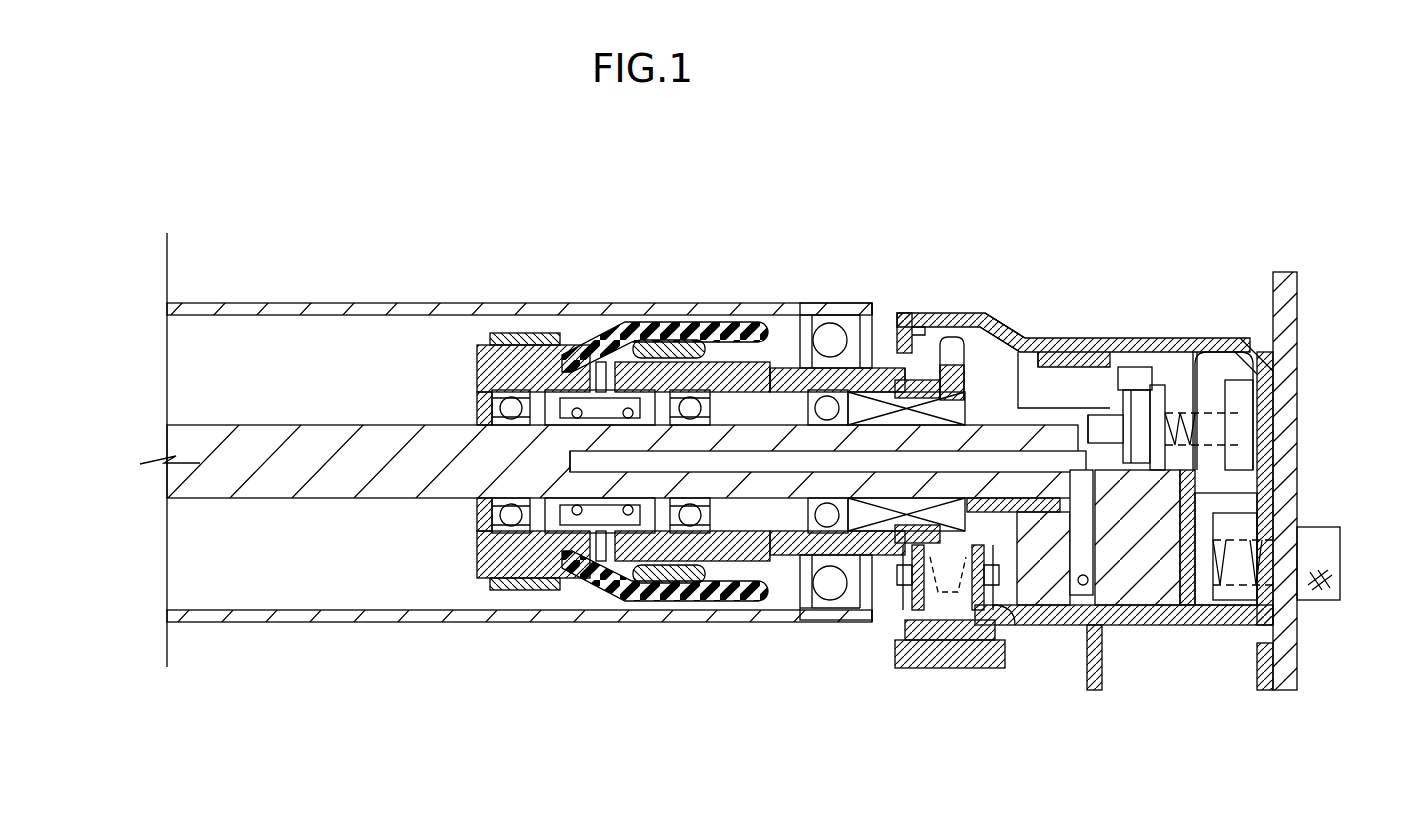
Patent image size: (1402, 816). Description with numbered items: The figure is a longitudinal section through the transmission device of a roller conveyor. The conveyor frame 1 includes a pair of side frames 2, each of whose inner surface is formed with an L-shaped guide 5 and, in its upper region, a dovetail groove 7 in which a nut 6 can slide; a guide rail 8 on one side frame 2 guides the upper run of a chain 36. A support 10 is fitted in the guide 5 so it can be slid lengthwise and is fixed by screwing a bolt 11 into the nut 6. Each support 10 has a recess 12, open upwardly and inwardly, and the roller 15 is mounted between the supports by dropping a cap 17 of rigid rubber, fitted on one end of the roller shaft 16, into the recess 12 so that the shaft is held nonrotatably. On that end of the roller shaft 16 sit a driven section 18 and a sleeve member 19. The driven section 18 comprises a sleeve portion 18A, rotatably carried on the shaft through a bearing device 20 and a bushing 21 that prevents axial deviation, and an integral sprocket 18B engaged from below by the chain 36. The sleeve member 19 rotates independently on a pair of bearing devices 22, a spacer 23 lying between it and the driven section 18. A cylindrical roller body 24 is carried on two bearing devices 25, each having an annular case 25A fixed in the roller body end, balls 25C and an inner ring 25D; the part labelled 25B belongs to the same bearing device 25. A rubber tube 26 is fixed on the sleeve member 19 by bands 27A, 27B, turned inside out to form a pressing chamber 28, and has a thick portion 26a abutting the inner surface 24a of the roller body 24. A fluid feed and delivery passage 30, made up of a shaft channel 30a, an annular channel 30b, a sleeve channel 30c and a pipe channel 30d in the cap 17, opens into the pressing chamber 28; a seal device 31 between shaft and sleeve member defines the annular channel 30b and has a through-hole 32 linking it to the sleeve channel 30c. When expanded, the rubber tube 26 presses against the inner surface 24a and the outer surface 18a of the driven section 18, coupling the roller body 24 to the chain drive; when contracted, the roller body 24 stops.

The conveyor frame 1 is at (1300, 670).
The side frame 2 is at (1256, 665).
The L-shaped guide 5 is at (1132, 575).
The nut 6 is at (1212, 466).
The dovetail groove 7 is at (1240, 380).
The guide rail 8 is at (942, 642).
The support 10 is at (1140, 575).
The bolt 11 is at (1155, 392).
The recess 12 is at (1082, 376).
The roller 15 is at (410, 623).
The roller shaft 16 is at (272, 482).
The cap 17 is at (1052, 458).
The driven section 18 is at (962, 338).
The outer surface of the driven section 18a is at (776, 366).
The sleeve portion 18A is at (902, 350).
The sprocket 18B is at (998, 322).
The sleeve member 19 is at (476, 378).
The bearing device 20 is at (826, 535).
The bushing 21 is at (874, 533).
The bearing devices 22 is at (505, 533).
The spacer 23 is at (776, 562).
The roller body 24 is at (312, 302).
The inner surface of the roller body 24a is at (582, 608).
The bearing device 25 is at (846, 320).
The annular case 25A is at (800, 557).
The bearing outer race 25B is at (858, 612).
The balls 25C is at (832, 318).
The inner ring 25D is at (903, 378).
The rubber tube 26 is at (572, 335).
The thick portion 26a is at (642, 338).
The band 27A is at (640, 596).
The band 27B is at (500, 333).
The pressing chamber 28 is at (692, 535).
The fluid feed and delivery passage 30 is at (1136, 390).
The shaft channel 30a is at (988, 384).
The annular channel 30b is at (601, 562).
The sleeve channel 30c is at (600, 362).
The pipe channel 30d is at (1088, 585).
The seal device 31 is at (560, 578).
The through-hole 32 is at (565, 432).
The chain 36 is at (984, 578).